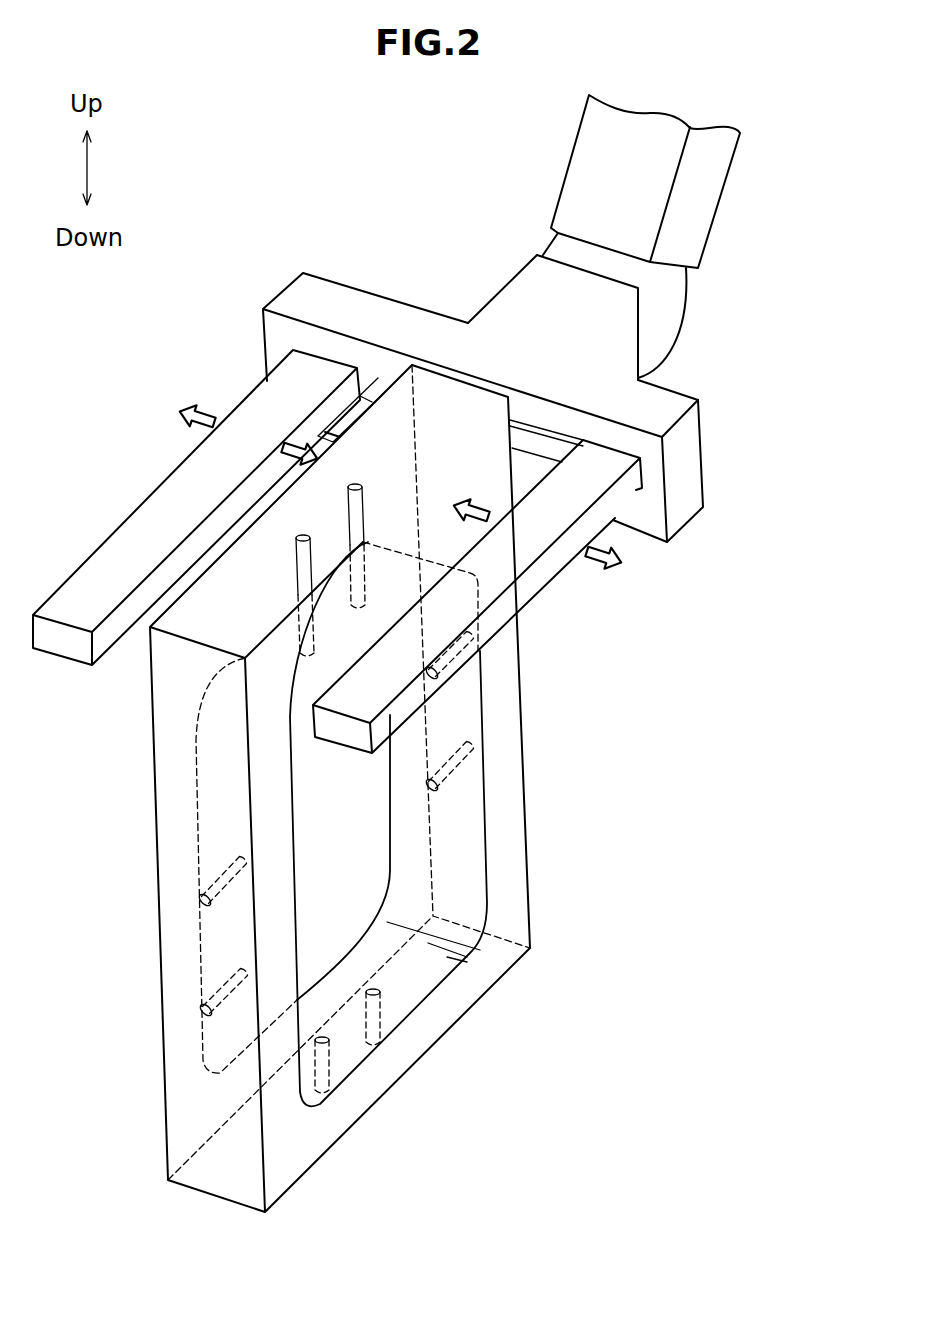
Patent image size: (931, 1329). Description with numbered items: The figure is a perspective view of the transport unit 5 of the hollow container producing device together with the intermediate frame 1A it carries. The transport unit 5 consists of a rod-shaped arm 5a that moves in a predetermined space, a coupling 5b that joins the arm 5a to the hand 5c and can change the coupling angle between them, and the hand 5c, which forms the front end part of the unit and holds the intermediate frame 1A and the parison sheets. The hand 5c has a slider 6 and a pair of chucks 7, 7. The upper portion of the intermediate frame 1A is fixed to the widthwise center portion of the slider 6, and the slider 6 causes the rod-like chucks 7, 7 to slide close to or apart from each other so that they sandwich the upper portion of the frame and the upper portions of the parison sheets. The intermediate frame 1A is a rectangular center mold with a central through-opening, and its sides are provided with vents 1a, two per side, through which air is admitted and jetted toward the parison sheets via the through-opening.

The intermediate frame 1A is at (160, 690).
The vents 1a is at (355, 484).
The transport unit 5 is at (649, 318).
The arm 5a is at (680, 200).
The coupling 5b is at (658, 315).
The hand 5c is at (690, 391).
The slider 6 is at (312, 287).
The chucks 7 is at (267, 405).